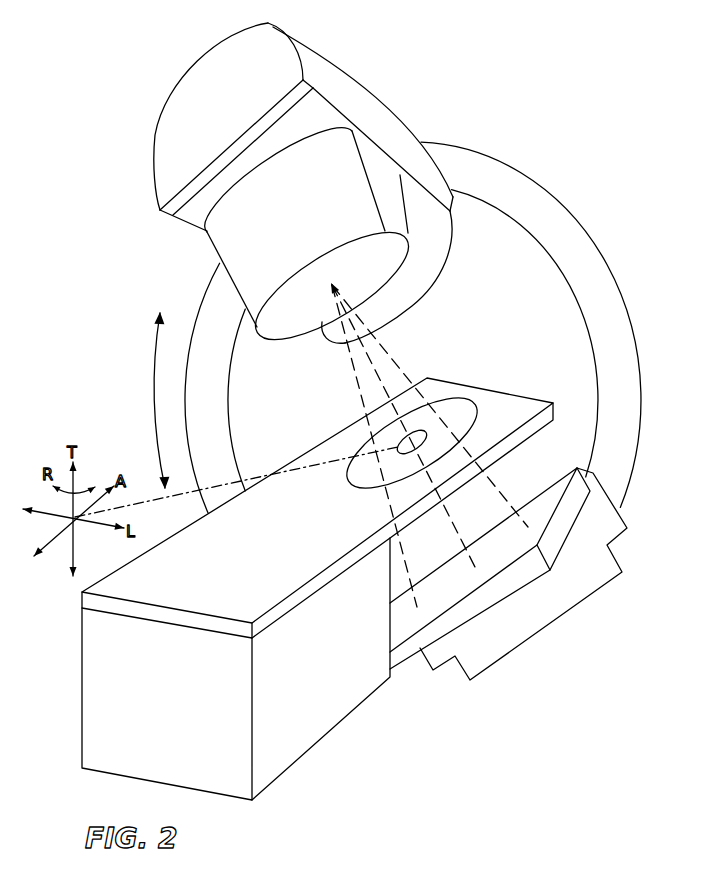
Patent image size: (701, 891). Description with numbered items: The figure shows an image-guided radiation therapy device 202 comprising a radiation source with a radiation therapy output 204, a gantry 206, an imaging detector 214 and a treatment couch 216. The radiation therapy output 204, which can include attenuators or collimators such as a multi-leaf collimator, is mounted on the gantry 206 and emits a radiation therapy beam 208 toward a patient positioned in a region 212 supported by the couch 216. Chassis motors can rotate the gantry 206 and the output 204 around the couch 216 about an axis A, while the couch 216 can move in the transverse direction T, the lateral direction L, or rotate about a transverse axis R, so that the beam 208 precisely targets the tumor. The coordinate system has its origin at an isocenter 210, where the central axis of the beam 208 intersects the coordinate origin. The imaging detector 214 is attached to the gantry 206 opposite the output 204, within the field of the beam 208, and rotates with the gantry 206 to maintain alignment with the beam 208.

The image-guided radiation therapy device 202 is at (175, 56).
The radiation therapy output 204 is at (226, 247).
The gantry 206 is at (581, 254).
The radiation therapy beam 208 is at (397, 366).
The isocenter 210 is at (404, 440).
The region 212 is at (458, 405).
The imaging detector 214 is at (541, 506).
The couch 216 is at (138, 573).